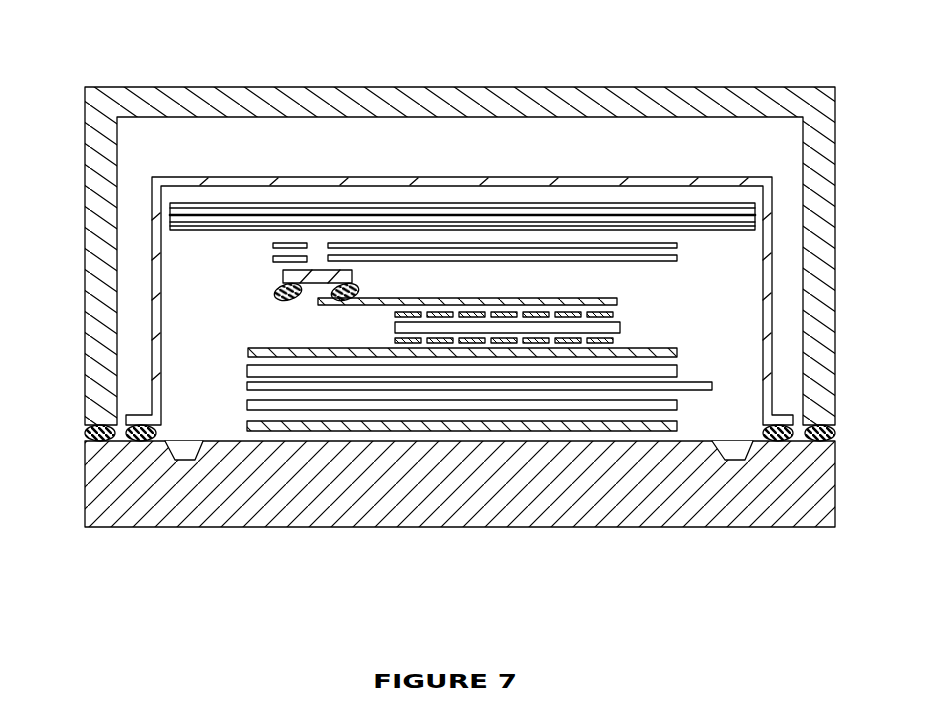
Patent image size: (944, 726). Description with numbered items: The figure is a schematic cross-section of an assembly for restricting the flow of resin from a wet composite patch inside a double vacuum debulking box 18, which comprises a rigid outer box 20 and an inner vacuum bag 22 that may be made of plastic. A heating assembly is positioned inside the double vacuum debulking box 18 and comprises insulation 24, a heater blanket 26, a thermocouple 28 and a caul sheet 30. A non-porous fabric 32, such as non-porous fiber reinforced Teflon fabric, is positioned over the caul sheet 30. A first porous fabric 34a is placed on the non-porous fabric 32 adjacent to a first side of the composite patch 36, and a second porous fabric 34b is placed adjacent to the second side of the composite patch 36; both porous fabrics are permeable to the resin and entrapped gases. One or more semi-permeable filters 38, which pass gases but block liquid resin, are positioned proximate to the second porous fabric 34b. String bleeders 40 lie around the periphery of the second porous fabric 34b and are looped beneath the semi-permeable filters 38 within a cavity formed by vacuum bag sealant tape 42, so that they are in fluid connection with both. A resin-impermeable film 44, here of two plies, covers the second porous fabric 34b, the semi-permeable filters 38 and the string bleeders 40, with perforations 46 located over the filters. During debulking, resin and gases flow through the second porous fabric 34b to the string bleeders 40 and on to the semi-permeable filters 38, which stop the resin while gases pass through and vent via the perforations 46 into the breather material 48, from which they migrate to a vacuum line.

The double vacuum debulking box 18 is at (197, 52).
The rigid outer box 20 is at (302, 88).
The inner vacuum bag 22 is at (396, 177).
The insulation 24 is at (248, 428).
The heater blanket 26 is at (250, 405).
The thermocouple 28 is at (697, 392).
The caul sheet 30 is at (668, 371).
The non-porous fabric 32 is at (248, 351).
The first porous fabric 34a is at (614, 341).
The second porous fabric 34b is at (614, 313).
The composite patch 36 is at (620, 328).
The semi-permeable filter 38 is at (283, 277).
The string bleeder 40 is at (392, 298).
The vacuum bag sealant tape 42 is at (147, 426).
The film 44 is at (678, 258).
The perforations 46 is at (314, 248).
The breather material 48 is at (201, 216).